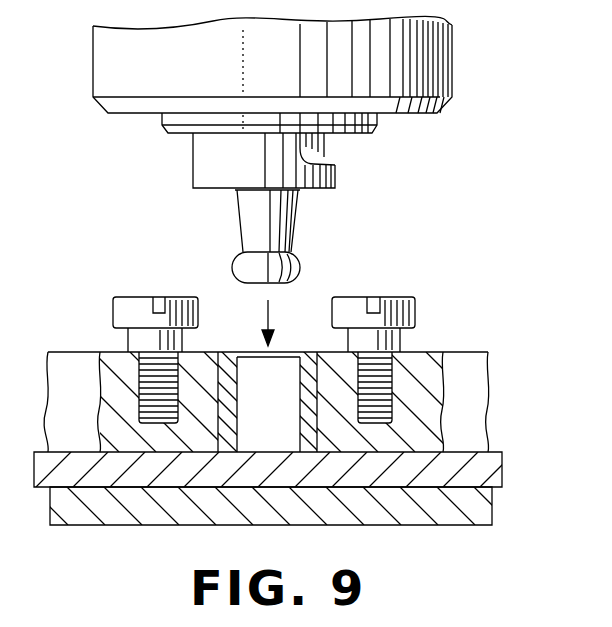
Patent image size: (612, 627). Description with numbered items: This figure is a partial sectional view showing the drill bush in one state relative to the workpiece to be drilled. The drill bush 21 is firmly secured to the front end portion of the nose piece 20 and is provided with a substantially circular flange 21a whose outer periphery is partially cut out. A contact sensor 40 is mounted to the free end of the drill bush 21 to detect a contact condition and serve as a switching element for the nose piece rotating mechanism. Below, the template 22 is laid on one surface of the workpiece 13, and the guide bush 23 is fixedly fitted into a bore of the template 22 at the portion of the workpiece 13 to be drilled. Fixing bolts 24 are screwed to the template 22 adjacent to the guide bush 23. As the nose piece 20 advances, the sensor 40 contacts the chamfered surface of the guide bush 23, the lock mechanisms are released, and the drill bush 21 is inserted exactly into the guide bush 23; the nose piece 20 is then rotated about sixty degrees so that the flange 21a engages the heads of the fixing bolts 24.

The nose piece 20 is at (452, 60).
The drill bush 21 is at (203, 160).
The flange 21a is at (337, 176).
The contact sensor 40 is at (300, 267).
The template 22 is at (482, 370).
The guide bush 23 is at (310, 352).
The fixing bolts 24 is at (130, 300).
The workpiece 13 is at (490, 462).